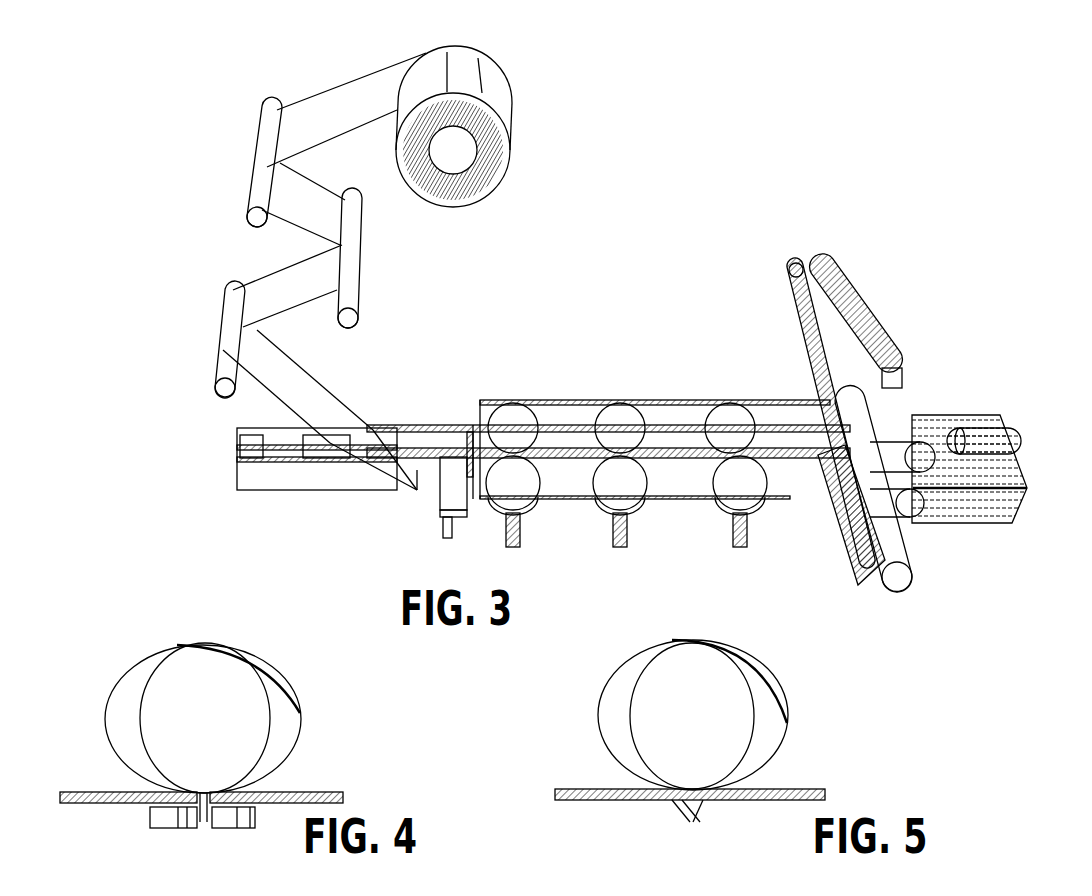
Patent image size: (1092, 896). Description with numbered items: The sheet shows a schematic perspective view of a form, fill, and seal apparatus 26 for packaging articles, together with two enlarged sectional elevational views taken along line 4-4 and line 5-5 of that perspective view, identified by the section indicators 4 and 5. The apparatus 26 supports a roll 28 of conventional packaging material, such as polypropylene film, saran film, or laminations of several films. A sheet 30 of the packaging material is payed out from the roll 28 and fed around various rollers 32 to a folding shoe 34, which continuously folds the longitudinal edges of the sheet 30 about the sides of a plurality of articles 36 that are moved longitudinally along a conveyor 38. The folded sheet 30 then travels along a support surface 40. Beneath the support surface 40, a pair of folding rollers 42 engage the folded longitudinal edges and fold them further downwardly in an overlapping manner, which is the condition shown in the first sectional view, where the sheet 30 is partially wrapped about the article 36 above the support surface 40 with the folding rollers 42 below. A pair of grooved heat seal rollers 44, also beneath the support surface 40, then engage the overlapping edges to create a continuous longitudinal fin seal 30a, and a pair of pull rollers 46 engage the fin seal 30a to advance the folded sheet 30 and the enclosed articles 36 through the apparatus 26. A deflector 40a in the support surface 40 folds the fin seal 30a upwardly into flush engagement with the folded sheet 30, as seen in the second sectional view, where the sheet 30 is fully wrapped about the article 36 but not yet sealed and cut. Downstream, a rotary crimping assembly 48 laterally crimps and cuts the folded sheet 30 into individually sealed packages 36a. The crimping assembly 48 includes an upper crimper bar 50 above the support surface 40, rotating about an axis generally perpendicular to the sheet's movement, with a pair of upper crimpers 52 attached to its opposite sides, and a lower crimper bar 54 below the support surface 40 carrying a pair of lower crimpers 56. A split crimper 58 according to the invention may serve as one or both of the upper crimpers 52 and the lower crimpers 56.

In FIG. 3, the form, fill, and seal apparatus 26 is at (683, 210).
In FIG. 3, the roll 28 is at (500, 130).
In FIG. 3, the sheet 30 is at (332, 108).
In FIG. 4, the sheet 30 is at (130, 668).
In FIG. 5, the sheet 30 is at (618, 670).
In FIG. 3, the rollers 32 is at (277, 110).
In FIG. 3, the folding shoe 34 is at (438, 425).
In FIG. 3, the articles 36 is at (260, 463).
In FIG. 4, the articles 36 is at (253, 703).
In FIG. 5, the articles 36 is at (737, 697).
In FIG. 3, the conveyor 38 is at (257, 480).
In FIG. 3, the support surface 40 is at (668, 400).
In FIG. 4, the support surface 40 is at (312, 792).
In FIG. 5, the support surface 40 is at (793, 792).
In FIG. 3, the folding rollers 42 is at (513, 420).
In FIG. 4, the folding rollers 42 is at (157, 817).
In FIG. 3, the grooved heat seal rollers 44 is at (623, 420).
In FIG. 3, the pull rollers 46 is at (723, 422).
In FIG. 3, the rotary crimping assembly 48 is at (872, 266).
In FIG. 3, the upper crimper bar 50 is at (915, 420).
In FIG. 3, the upper crimpers 52 is at (884, 310).
In FIG. 3, the lower crimper bar 54 is at (897, 580).
In FIG. 3, the lower crimpers 56 is at (893, 513).
In FIG. 3, the split crimper 58 is at (833, 553).
In FIG. 3, the individually sealed packages 36a is at (997, 440).
In FIG. 5, the deflector 40a is at (687, 813).
In FIG. 5, the fin seal 30a is at (707, 810).
In FIG. 3, the section line 4- 4 is at (560, 407).
In FIG. 3, the section line 5- 5 is at (768, 387).